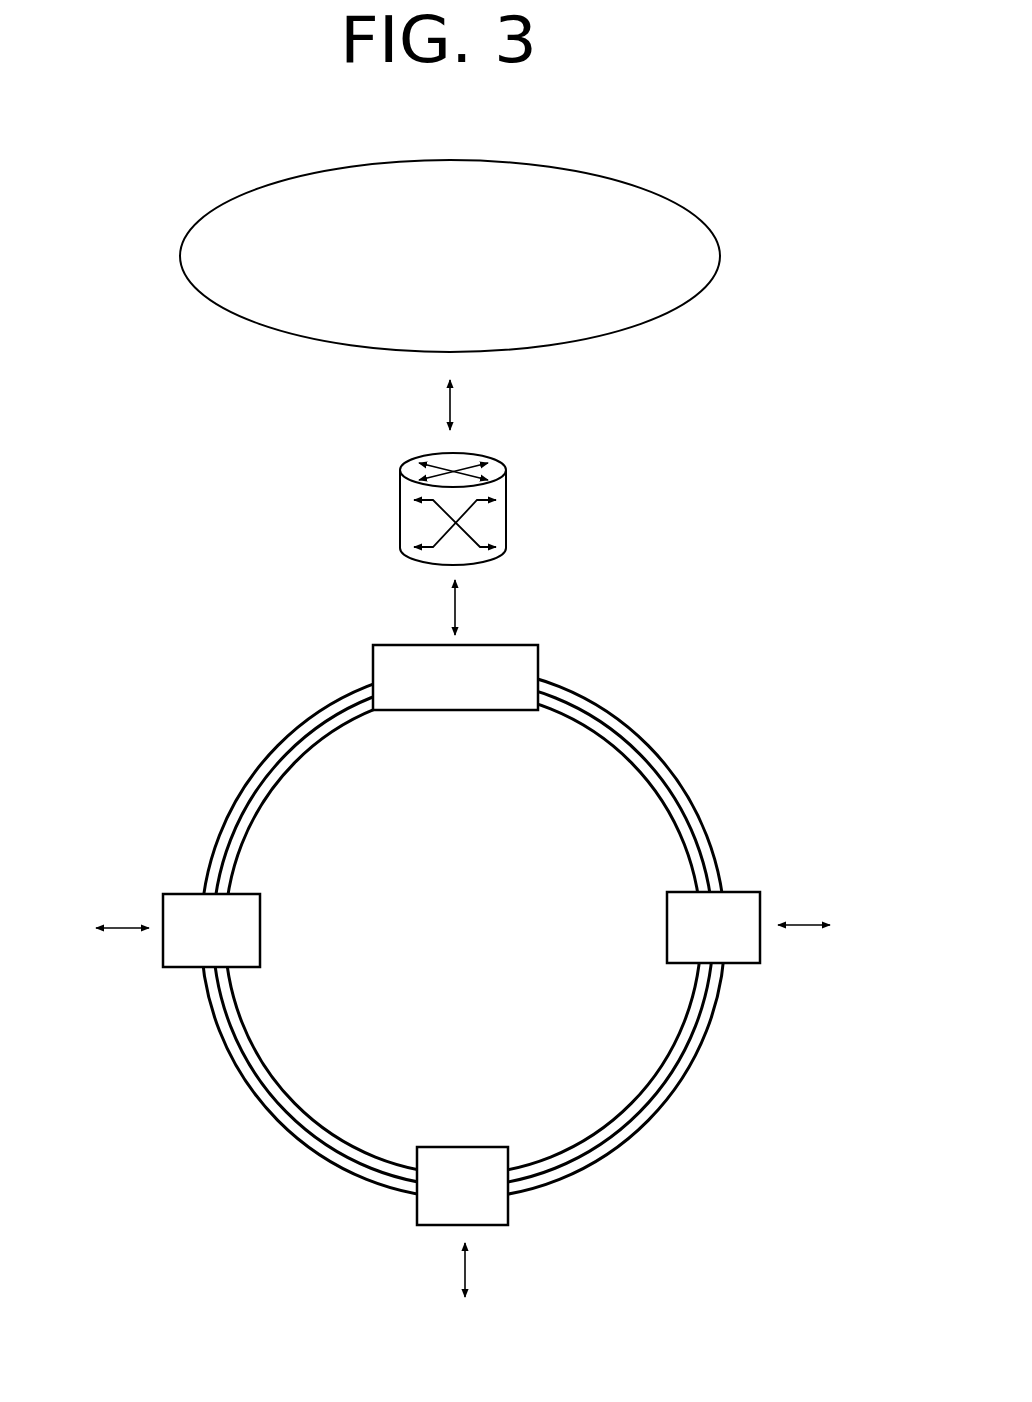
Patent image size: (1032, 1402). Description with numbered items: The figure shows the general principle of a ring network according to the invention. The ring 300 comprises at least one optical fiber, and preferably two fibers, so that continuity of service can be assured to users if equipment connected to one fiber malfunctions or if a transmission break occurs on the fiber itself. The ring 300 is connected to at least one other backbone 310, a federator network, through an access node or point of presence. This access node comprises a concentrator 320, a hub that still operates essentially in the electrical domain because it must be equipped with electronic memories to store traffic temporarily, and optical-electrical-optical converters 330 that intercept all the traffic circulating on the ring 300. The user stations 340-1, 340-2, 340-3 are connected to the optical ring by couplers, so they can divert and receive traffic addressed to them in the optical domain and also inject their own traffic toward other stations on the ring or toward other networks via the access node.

The ring 300 is at (668, 765).
The backbone 310 is at (643, 310).
The concentrator 320 is at (412, 533).
The optical-electrical-optical converters 330 is at (497, 695).
The user station 340-1 is at (193, 908).
The user station 340-2 is at (440, 1213).
The user station 340-3 is at (740, 953).